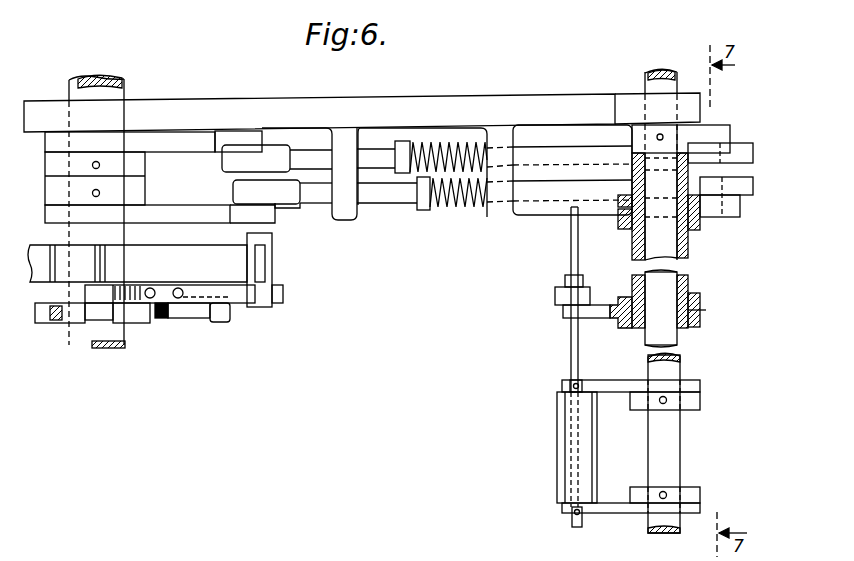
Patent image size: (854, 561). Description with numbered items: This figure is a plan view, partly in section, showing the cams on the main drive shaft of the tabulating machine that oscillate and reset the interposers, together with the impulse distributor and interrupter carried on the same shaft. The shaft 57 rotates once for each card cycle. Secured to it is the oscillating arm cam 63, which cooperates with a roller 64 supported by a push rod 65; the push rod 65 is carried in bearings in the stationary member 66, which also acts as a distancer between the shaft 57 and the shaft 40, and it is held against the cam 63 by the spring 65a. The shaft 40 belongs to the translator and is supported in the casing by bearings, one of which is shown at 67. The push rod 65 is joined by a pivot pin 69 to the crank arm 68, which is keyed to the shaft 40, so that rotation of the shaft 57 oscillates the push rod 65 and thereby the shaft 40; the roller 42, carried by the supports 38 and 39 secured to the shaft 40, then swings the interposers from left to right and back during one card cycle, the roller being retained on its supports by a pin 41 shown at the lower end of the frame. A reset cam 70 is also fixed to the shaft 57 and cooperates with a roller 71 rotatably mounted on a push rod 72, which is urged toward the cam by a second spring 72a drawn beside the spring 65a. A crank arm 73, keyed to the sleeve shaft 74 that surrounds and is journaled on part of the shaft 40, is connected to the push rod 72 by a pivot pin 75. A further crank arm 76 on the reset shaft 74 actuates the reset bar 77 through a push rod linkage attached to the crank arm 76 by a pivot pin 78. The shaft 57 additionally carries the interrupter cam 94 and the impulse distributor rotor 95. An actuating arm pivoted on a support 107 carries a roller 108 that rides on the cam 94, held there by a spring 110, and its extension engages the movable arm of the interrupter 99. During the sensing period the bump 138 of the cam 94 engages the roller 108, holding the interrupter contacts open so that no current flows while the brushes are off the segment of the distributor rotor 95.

The support 38 is at (621, 513).
The support 39 is at (606, 384).
The shaft 40 is at (657, 86).
The pin 41 is at (573, 518).
The roller 42 is at (560, 470).
The shaft 57 is at (97, 349).
The oscillating arm cam 63 is at (165, 142).
The roller 64 is at (237, 146).
The push rod 65 is at (372, 152).
The spring 65a is at (442, 142).
The stationary member 66 is at (525, 104).
The bearing 67 is at (628, 100).
The crank arm 68 is at (690, 134).
The pivot pin 69 is at (706, 128).
The reset cam 70 is at (162, 213).
The roller 71 is at (276, 214).
The push rod 72 is at (381, 194).
The spring 72a is at (467, 207).
The crank arm 73 is at (624, 215).
The sleeve shaft 74 is at (688, 237).
The pivot pin 75 is at (712, 178).
The crank arm 76 is at (608, 322).
The reset bar 77 is at (570, 240).
The pivot pin 78 is at (572, 298).
The interrupter cam 94 is at (138, 322).
The impulse distributor rotor 95 is at (163, 256).
The interrupter 99 is at (239, 306).
The support 107 is at (200, 319).
The roller 108 is at (88, 322).
The spring 110 is at (165, 320).
The bump 138 is at (44, 322).